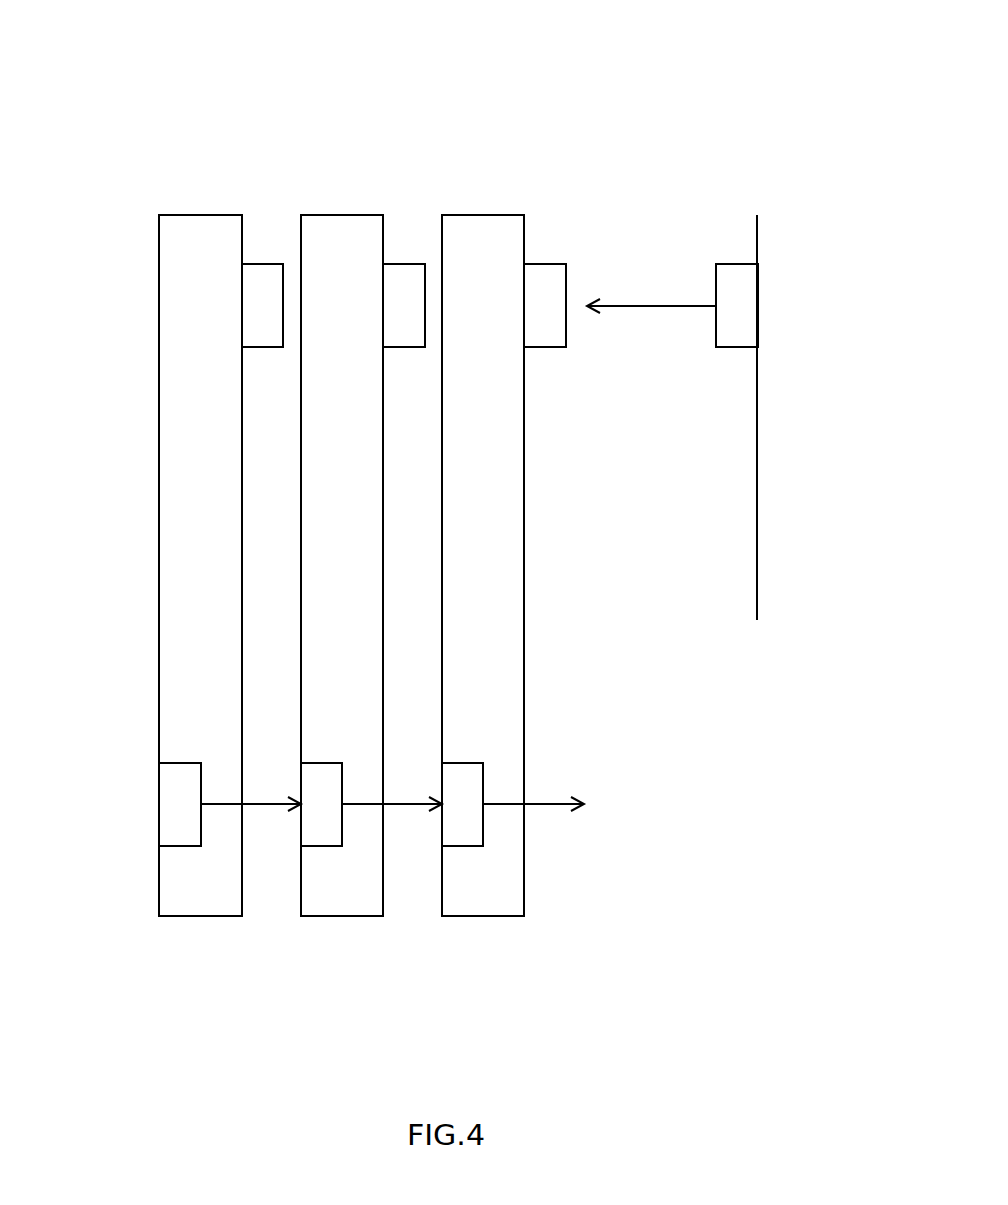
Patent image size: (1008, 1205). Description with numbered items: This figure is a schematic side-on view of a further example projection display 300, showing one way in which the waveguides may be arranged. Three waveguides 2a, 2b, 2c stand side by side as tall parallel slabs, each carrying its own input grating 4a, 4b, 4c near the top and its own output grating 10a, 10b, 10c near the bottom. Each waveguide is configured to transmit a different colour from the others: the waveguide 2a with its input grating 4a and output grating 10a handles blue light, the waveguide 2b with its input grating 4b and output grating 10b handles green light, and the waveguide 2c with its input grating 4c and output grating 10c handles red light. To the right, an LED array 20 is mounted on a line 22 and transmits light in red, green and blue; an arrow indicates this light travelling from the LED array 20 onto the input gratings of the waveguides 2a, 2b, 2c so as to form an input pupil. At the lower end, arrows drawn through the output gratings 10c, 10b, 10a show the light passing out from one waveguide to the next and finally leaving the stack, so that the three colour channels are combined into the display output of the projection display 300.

The projection display 300 is at (152, 112).
The waveguide 2a is at (484, 215).
The waveguide 2b is at (342, 215).
The waveguide 2c is at (202, 215).
The input grating 4a is at (546, 264).
The input grating 4b is at (402, 264).
The input grating 4c is at (267, 264).
The output grating 10a is at (463, 846).
The output grating 10b is at (320, 846).
The output grating 10c is at (180, 846).
The LED array 20 is at (743, 283).
The support line 22 is at (757, 532).